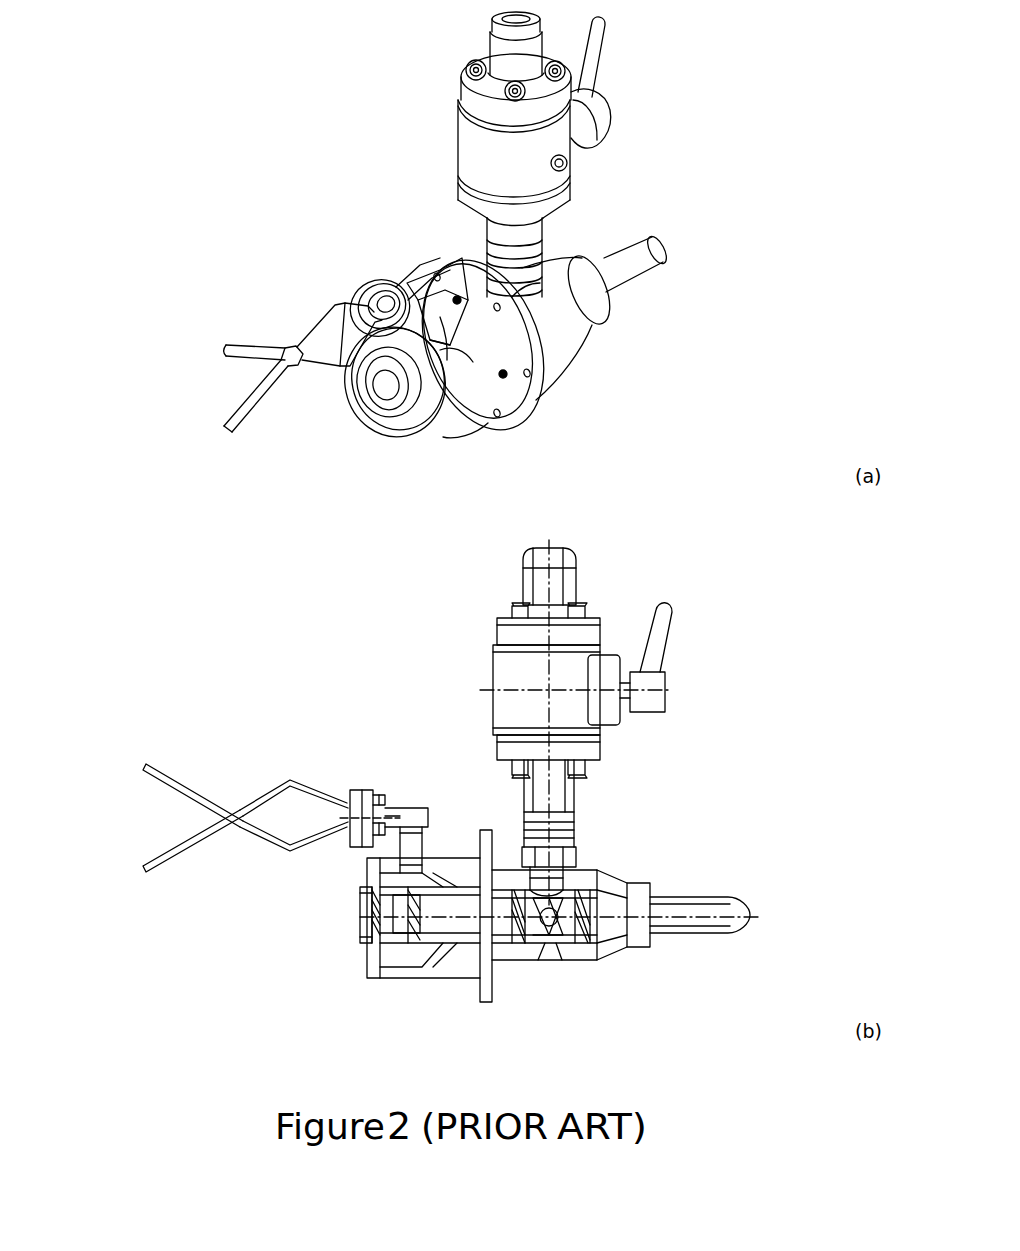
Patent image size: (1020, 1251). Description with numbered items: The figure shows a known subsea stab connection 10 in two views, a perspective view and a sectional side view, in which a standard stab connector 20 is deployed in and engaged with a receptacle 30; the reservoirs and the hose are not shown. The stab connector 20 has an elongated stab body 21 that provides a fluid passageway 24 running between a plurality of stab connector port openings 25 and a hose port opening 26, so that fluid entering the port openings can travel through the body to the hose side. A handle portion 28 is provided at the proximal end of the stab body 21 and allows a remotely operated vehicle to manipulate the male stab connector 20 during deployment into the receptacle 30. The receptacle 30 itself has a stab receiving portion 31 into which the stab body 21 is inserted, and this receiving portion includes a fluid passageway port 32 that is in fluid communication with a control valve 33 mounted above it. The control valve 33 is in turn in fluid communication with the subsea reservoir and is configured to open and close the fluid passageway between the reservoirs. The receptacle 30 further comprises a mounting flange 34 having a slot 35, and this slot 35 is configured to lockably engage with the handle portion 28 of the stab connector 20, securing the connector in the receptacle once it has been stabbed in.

The subsea stab connection 10 is at (750, 137).
The stab connector 20 is at (715, 975).
The stab body 21 is at (720, 905).
The fluid passageway 24 is at (460, 927).
The stab connector port openings 25 is at (545, 965).
The hose port opening 26 is at (363, 926).
The handle portion 28 is at (310, 320).
The receptacle 30 is at (587, 235).
The stab receiving portion 31 is at (630, 380).
The fluid passageway port 32 is at (606, 320).
The control valve 33 is at (470, 152).
The mounting flange 34 is at (455, 408).
The slot 35 is at (465, 272).